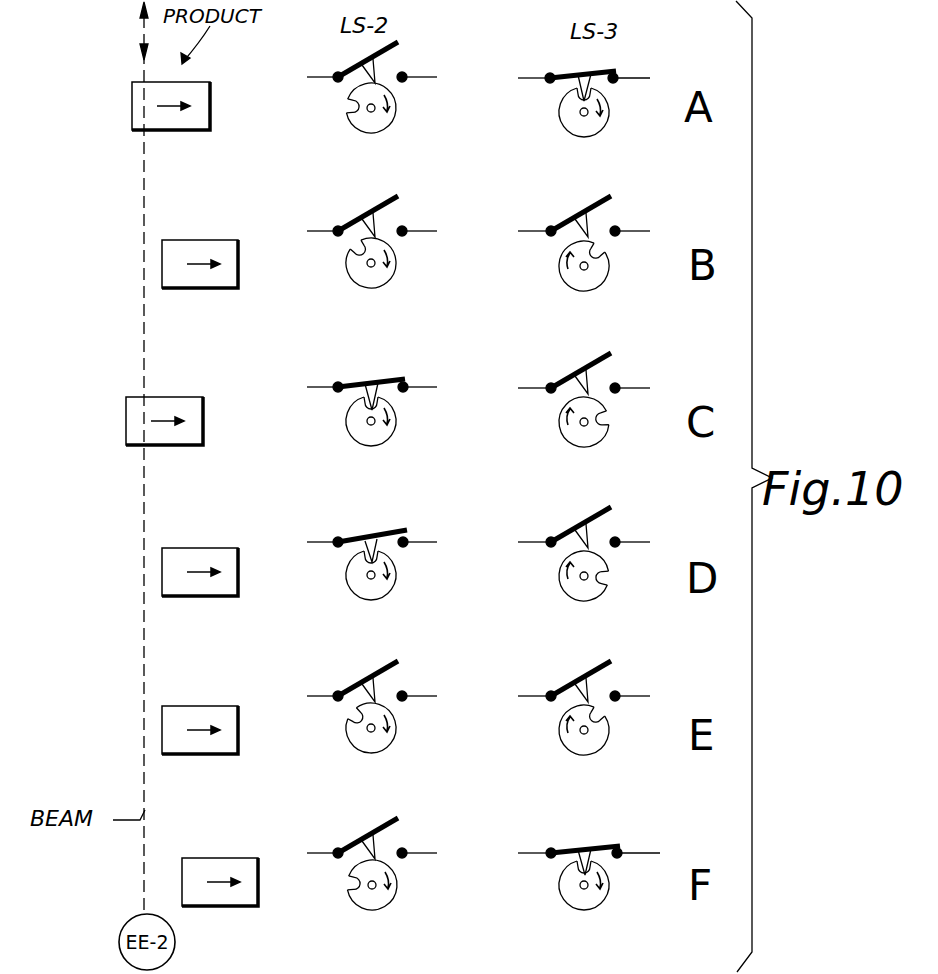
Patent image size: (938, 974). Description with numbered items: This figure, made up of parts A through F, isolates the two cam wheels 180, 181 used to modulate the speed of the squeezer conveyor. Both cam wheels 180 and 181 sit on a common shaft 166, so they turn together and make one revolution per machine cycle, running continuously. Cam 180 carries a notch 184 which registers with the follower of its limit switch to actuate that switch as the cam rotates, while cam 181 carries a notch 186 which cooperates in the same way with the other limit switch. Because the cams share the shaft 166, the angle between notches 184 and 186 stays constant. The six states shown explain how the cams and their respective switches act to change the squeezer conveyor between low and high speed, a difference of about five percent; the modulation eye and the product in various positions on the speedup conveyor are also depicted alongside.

The common shaft 166 is at (371, 112).
The cam wheel 180 is at (392, 115).
The cam wheel 181 is at (590, 125).
The notch 184 is at (352, 110).
The notch 186 is at (353, 250).